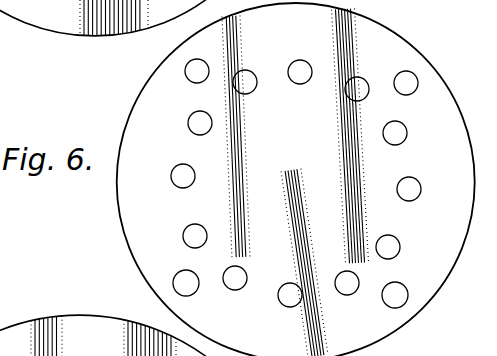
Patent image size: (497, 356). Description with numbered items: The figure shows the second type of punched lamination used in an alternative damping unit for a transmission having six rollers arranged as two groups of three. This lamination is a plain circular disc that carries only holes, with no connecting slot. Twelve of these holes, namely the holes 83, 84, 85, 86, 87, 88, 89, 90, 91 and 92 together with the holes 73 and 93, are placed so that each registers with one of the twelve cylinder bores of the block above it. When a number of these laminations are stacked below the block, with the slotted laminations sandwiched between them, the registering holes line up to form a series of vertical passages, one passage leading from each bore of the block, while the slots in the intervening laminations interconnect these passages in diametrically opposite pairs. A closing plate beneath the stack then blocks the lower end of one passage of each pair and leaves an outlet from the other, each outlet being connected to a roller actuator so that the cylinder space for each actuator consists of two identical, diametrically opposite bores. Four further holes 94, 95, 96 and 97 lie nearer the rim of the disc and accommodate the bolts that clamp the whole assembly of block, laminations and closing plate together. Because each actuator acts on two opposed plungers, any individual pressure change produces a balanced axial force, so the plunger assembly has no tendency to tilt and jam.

The hole 73 is at (421, 189).
The hole 83 is at (407, 133).
The hole 84 is at (359, 78).
The hole 85 is at (300, 84).
The hole 86 is at (251, 93).
The hole 87 is at (189, 125).
The hole 88 is at (183, 237).
The hole 89 is at (240, 289).
The hole 90 is at (288, 306).
The hole 91 is at (347, 272).
The hole 92 is at (397, 242).
The hole 93 is at (178, 187).
The additional hole 94 is at (412, 82).
The additional hole 95 is at (188, 79).
The additional hole 96 is at (174, 284).
The additional hole 97 is at (407, 300).